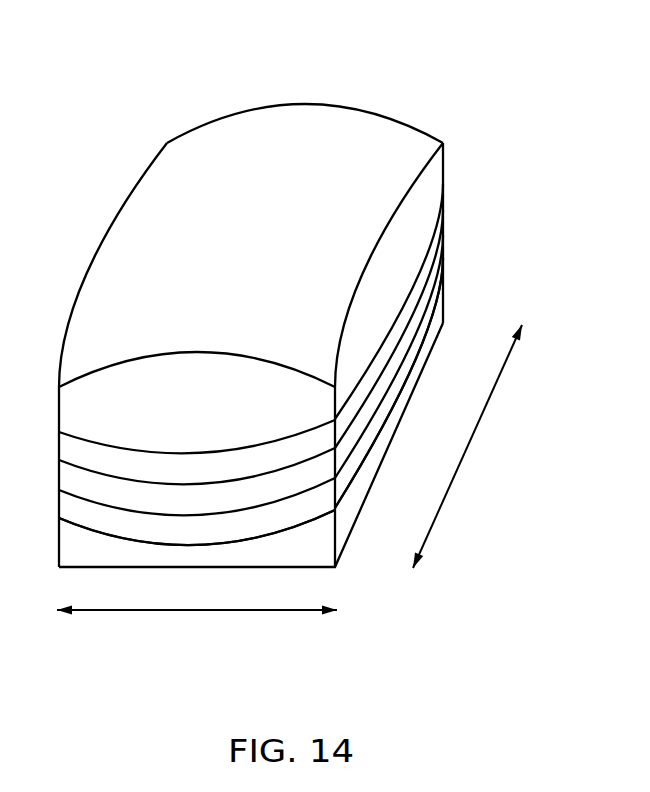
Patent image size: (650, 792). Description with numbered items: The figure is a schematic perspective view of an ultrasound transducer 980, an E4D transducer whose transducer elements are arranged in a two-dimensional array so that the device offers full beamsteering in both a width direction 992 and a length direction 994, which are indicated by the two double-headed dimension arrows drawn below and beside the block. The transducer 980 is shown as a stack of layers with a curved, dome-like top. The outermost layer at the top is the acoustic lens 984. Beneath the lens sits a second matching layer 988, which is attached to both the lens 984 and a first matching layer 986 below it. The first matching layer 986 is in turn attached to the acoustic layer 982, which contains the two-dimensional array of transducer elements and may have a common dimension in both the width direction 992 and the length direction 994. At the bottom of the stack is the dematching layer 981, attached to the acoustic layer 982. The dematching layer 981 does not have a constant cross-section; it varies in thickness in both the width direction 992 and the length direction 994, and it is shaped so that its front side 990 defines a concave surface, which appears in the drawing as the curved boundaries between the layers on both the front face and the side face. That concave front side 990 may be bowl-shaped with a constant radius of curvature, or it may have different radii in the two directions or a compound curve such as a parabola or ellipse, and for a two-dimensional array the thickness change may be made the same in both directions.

The ultrasound transducer 980 is at (412, 68).
The acoustic lens 984 is at (437, 174).
The second matching layer 988 is at (443, 200).
The first matching layer 986 is at (443, 231).
The acoustic layer 982 is at (443, 264).
The dematching layer 981 is at (442, 318).
The front side 990 is at (405, 380).
The width direction 992 is at (197, 611).
The length direction 994 is at (470, 443).